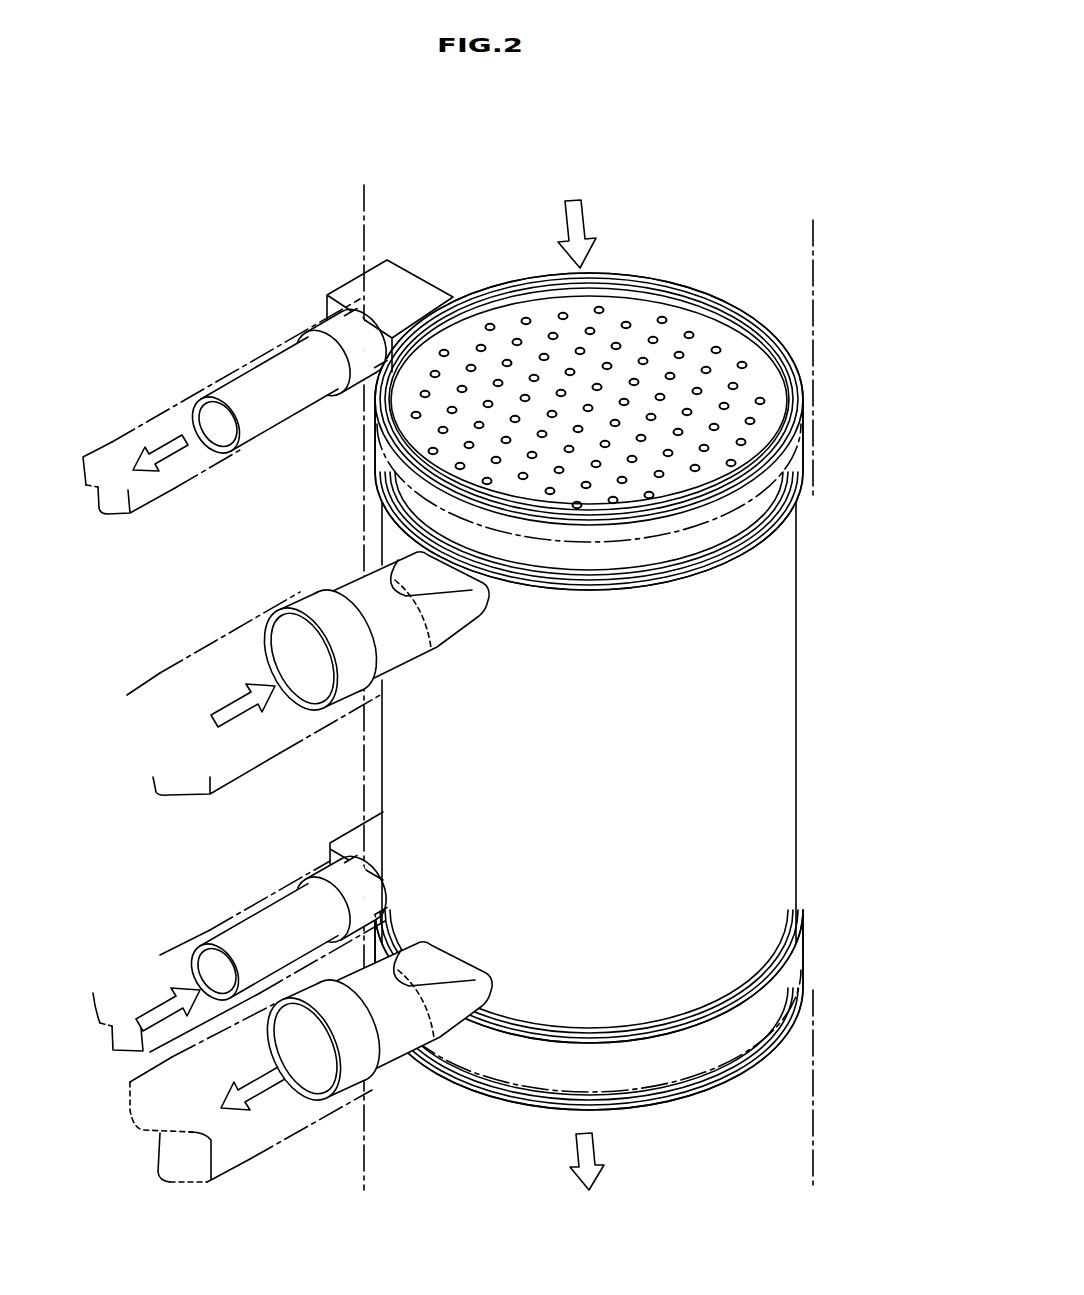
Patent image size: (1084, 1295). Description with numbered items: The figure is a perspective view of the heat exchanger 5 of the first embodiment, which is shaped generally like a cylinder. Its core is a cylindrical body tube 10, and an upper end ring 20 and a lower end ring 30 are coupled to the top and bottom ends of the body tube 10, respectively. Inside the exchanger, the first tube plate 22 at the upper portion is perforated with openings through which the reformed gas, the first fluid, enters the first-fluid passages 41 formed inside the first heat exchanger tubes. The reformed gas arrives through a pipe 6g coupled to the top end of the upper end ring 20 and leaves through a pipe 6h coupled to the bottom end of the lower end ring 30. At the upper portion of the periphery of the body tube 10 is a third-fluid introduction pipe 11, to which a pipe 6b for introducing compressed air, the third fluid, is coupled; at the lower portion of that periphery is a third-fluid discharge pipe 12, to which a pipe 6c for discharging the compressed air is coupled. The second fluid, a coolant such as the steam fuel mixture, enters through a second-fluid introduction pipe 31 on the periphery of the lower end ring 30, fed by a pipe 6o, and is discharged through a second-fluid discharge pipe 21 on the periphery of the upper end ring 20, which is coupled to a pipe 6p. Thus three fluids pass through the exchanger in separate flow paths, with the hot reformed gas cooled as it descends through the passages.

The heat exchanger 5 is at (244, 236).
The body tube 10 is at (742, 643).
The upper end ring 20 is at (772, 510).
The lower end ring 30 is at (772, 1018).
The first tube plate 22 is at (703, 330).
The first-fluid passage 41 is at (657, 316).
The second-fluid discharge pipe 21 is at (281, 366).
The second-fluid introduction pipe 31 is at (303, 893).
The third-fluid introduction pipe 11 is at (351, 595).
The third-fluid discharge pipe 12 is at (384, 1038).
The pipe for discharging the coolant 6p is at (165, 403).
The pipe for introducing compressed air 6b is at (267, 612).
The pipe for introducing a coolant 6o is at (250, 902).
The pipe for discharging the compressed air 6c is at (297, 1132).
The pipe for introducing a reformed gas 6g is at (813, 263).
The pipe for discharging the reformed gas 6h is at (813, 1098).